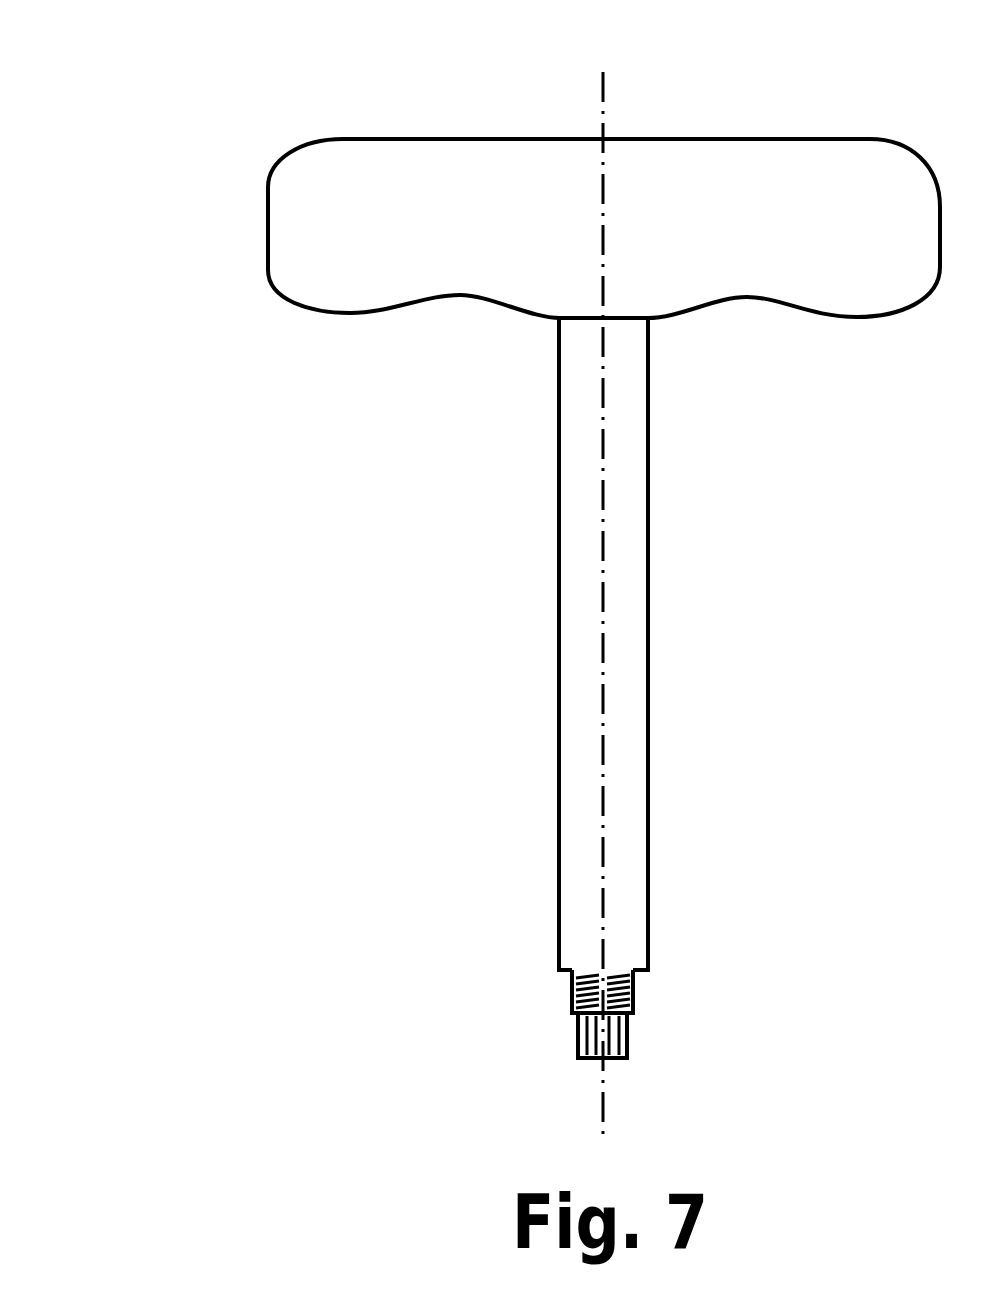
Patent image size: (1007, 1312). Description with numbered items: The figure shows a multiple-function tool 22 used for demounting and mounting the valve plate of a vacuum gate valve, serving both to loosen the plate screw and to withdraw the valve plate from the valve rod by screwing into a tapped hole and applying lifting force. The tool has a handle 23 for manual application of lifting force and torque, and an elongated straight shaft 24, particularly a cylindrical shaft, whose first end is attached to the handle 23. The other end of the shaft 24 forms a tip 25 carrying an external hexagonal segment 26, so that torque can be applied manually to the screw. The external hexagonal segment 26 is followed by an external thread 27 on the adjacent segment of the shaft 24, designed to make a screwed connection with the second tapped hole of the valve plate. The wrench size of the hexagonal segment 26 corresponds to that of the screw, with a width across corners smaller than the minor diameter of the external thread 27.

The multiple-function tool 22 is at (212, 95).
The handle 23 is at (712, 202).
The shaft 24 is at (620, 575).
The tip 25 is at (483, 982).
The external hexagonal segment 26 is at (627, 1032).
The external thread 27 is at (633, 982).